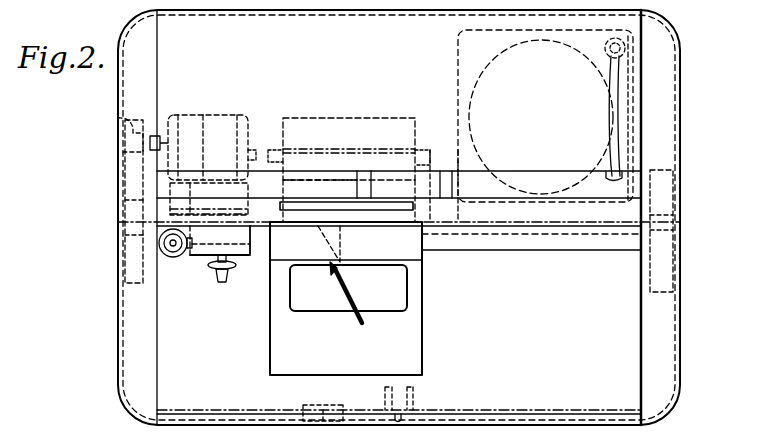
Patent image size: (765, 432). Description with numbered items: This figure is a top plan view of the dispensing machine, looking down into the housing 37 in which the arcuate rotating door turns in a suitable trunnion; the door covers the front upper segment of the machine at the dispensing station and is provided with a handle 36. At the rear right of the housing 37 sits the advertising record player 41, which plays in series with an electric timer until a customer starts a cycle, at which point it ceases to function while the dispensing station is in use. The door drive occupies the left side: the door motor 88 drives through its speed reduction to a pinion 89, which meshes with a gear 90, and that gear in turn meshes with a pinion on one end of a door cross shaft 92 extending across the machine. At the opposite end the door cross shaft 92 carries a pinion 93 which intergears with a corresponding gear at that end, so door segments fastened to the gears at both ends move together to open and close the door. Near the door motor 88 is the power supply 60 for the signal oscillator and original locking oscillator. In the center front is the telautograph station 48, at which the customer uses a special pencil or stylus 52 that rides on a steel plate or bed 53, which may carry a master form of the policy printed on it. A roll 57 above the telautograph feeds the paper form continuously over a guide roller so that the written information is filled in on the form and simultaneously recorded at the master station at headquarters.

The housing 37 is at (667, 296).
The pinion 89 is at (118, 120).
The gear 90 is at (125, 258).
The door motor 88 is at (196, 124).
The power supply 60 is at (206, 180).
The roll 57 is at (363, 135).
The handle 36 is at (420, 195).
The advertising record player 41 is at (545, 116).
The pinion 93 is at (680, 196).
The door cross shaft 92 is at (510, 238).
The telautograph station 48 is at (412, 353).
The steel plate or bed 53 is at (404, 299).
The pencil or stylus 52 is at (349, 296).